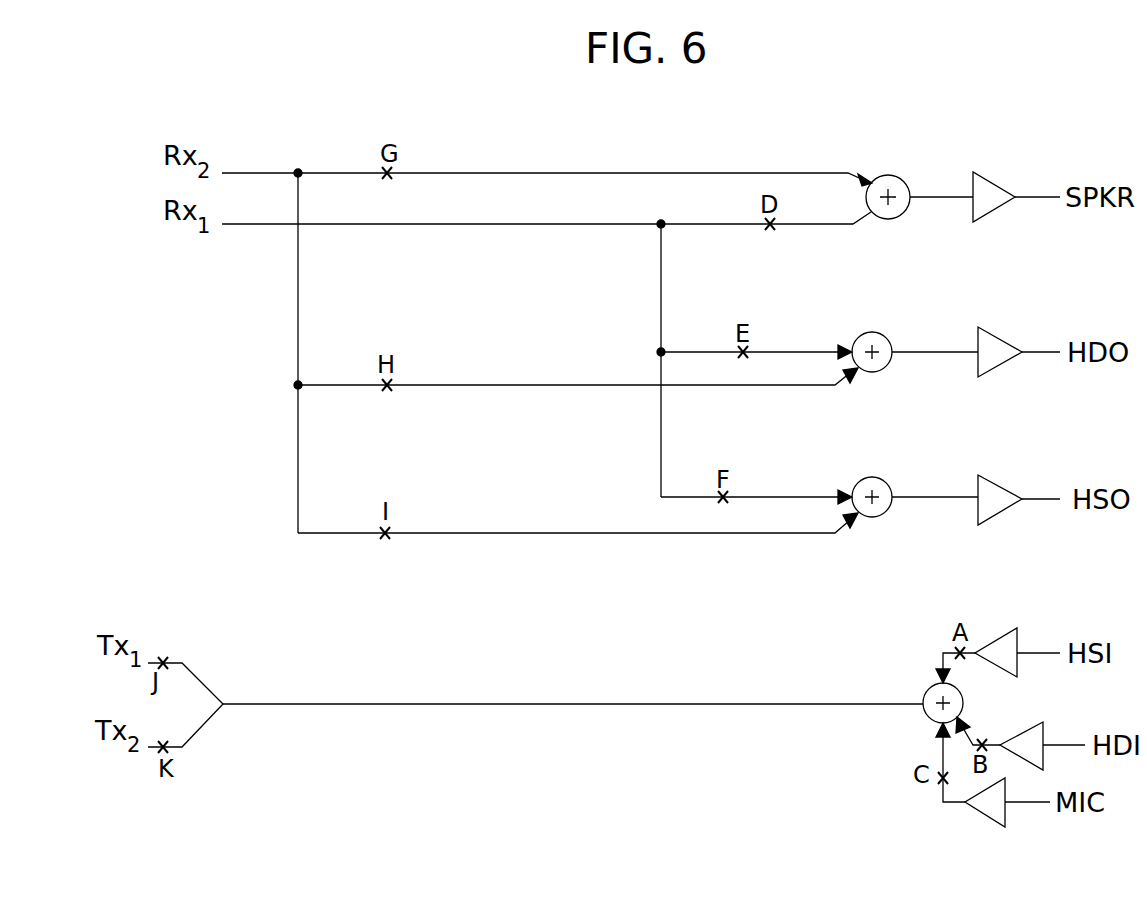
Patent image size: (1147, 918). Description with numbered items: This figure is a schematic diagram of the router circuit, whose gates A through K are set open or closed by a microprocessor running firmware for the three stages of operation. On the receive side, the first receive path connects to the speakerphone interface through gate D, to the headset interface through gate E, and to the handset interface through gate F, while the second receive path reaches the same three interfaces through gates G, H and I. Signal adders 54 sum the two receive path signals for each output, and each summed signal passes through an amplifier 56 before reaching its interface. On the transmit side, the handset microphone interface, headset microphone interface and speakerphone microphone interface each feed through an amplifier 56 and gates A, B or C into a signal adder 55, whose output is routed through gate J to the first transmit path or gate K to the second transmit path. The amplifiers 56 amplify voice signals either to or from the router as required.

The signal adder 54 is at (890, 177).
The signal adder 55 is at (928, 713).
The amplifier 56 is at (978, 172).